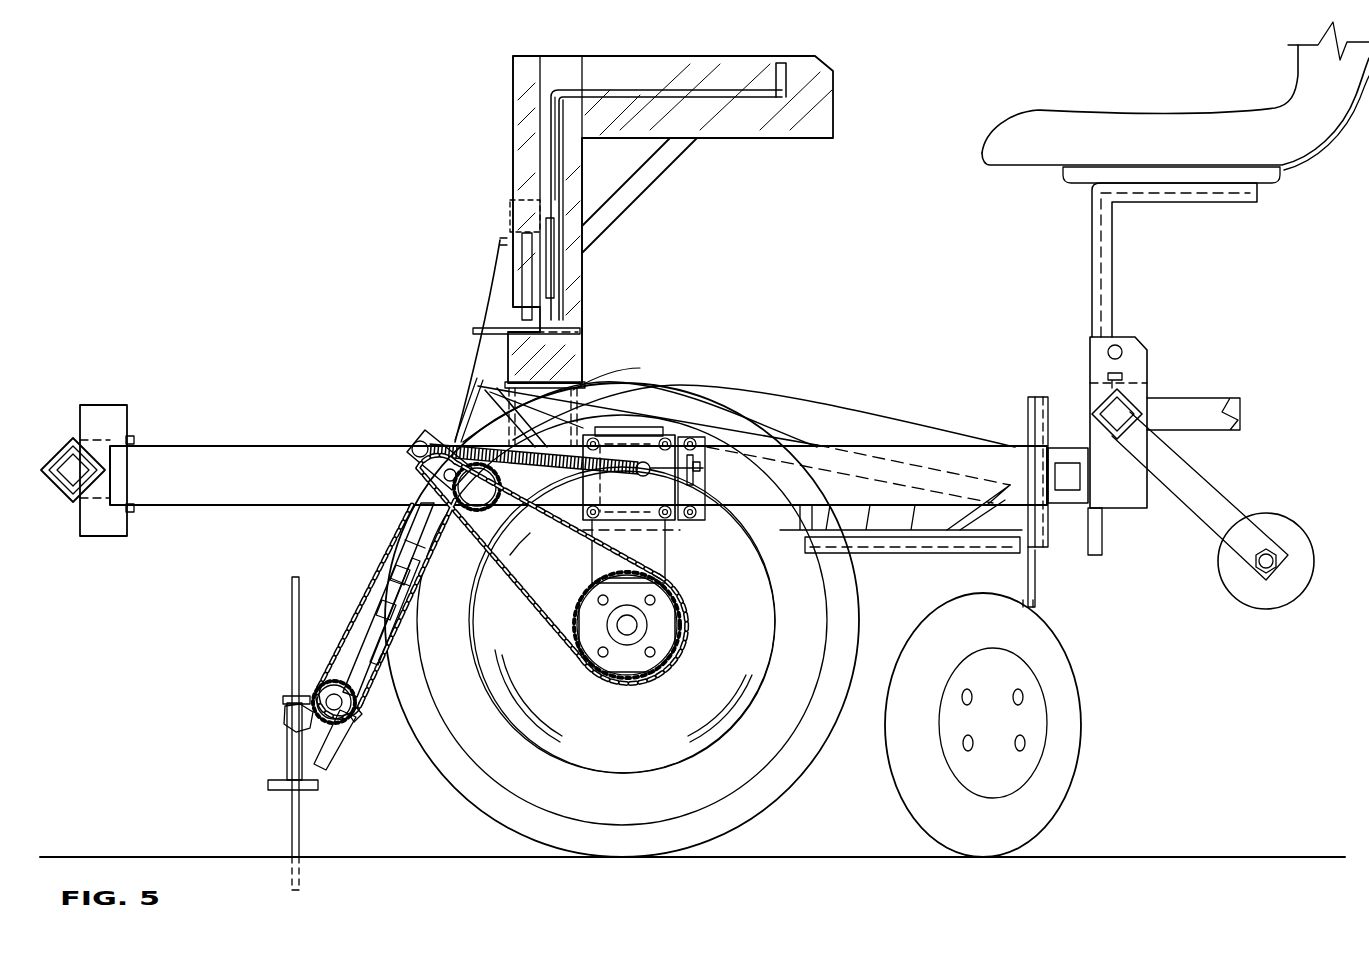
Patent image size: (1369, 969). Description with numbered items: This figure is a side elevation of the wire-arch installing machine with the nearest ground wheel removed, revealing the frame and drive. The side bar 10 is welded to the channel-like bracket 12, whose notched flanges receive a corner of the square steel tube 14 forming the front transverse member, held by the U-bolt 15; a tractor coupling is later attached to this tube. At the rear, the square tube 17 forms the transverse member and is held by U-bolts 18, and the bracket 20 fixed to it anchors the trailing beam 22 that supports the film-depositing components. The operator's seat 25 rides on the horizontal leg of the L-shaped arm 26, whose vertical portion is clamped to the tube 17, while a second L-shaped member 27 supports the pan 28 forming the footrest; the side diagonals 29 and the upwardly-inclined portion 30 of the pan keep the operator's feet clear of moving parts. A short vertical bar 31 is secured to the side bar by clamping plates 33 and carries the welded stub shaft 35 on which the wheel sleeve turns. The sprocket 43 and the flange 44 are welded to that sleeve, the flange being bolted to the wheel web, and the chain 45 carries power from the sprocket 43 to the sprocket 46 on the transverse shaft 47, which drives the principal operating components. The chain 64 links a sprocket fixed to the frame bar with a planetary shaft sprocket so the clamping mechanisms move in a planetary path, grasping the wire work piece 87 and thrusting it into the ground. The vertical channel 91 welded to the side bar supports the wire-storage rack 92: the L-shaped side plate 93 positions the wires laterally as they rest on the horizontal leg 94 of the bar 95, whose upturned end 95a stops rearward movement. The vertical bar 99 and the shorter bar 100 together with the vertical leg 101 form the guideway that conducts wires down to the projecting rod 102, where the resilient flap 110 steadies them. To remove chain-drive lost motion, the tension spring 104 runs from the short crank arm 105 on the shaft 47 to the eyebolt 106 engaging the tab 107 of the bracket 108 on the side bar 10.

The side bar 10 is at (265, 446).
The bracket 12 is at (127, 416).
The square steel tube 14 is at (66, 448).
The U-bolt 15 is at (65, 492).
The square tube 17 is at (1075, 495).
The U-bolts 18 is at (1072, 448).
The bracket 20 is at (1125, 507).
The trailing beam 22 is at (1178, 398).
The operator's seat 25 is at (1142, 113).
The L-shaped arm 26 is at (1113, 266).
The L-shaped member 27 is at (921, 549).
The pan 28 is at (884, 529).
The side diagonals 29 is at (700, 395).
The upwardly-inclined portion 30 is at (657, 418).
The short vertical bar 31 is at (660, 560).
The clamping plates 33 is at (630, 504).
The stub shaft 35 is at (634, 628).
The sprocket 43 is at (586, 590).
The flange 44 is at (622, 666).
The chain 45 is at (548, 625).
The sprocket 46 is at (483, 500).
The transverse shaft 47 is at (440, 476).
The chain 64 is at (380, 570).
The wire work piece 87 is at (290, 620).
The vertical channel 91 is at (613, 368).
The wire-storage rack 92 is at (705, 50).
The L-shaped side plate 93 is at (792, 140).
The horizontal leg 94 is at (665, 88).
The bar 95 is at (593, 88).
The upturned rear extremity 95a is at (788, 75).
The vertical bar 99 is at (514, 160).
The shorter bar 100 is at (581, 295).
The vertical leg 101 is at (553, 150).
The projecting rod 102 is at (492, 344).
The tension spring 104 is at (448, 444).
The short crank arm 105 is at (420, 445).
The eyebolt 106 is at (732, 408).
The tab 107 is at (697, 482).
The bracket 108 is at (703, 462).
The resilient flap 110 is at (473, 385).